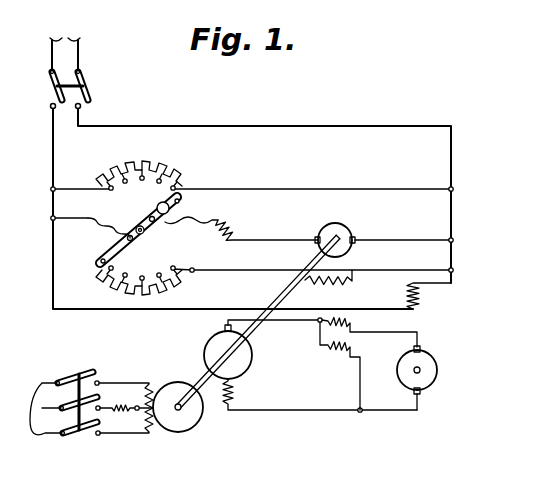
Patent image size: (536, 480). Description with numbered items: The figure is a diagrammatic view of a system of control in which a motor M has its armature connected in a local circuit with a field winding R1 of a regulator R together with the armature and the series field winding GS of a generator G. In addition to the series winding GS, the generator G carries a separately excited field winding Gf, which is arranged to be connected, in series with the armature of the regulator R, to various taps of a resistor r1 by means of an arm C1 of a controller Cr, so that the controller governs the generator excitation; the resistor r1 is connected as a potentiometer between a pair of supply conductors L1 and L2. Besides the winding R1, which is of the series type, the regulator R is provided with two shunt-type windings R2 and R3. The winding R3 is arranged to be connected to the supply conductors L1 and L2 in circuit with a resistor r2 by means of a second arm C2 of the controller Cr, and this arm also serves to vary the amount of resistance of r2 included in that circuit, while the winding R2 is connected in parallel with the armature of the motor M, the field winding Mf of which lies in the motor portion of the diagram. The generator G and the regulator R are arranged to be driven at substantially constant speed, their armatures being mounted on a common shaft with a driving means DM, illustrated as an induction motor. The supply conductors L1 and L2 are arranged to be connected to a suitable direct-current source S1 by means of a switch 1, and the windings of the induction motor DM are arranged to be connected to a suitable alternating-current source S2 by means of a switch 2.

The direct-current source S1 is at (65, 61).
The switch 1 is at (86, 74).
The resistor r1 is at (160, 164).
The resistor r2 is at (178, 293).
The arm of controller C1 is at (179, 203).
The second arm of controller C2 is at (108, 262).
The controller Cr is at (153, 230).
The supply conductor L1 is at (53, 247).
The supply conductor L2 is at (451, 218).
The separately excited field winding Gf is at (232, 229).
The regulator R is at (349, 230).
The shunt winding of regulator R3 is at (328, 283).
The motor field winding Mf is at (420, 296).
The field winding of regulator R1 is at (342, 327).
The shunt winding of regulator R2 is at (348, 350).
The generator G is at (257, 340).
The series field winding of generator GS is at (233, 390).
The motor M is at (436, 363).
The driving means DM is at (165, 430).
The switch 2 is at (79, 372).
The alternating-current source S2 is at (90, 423).